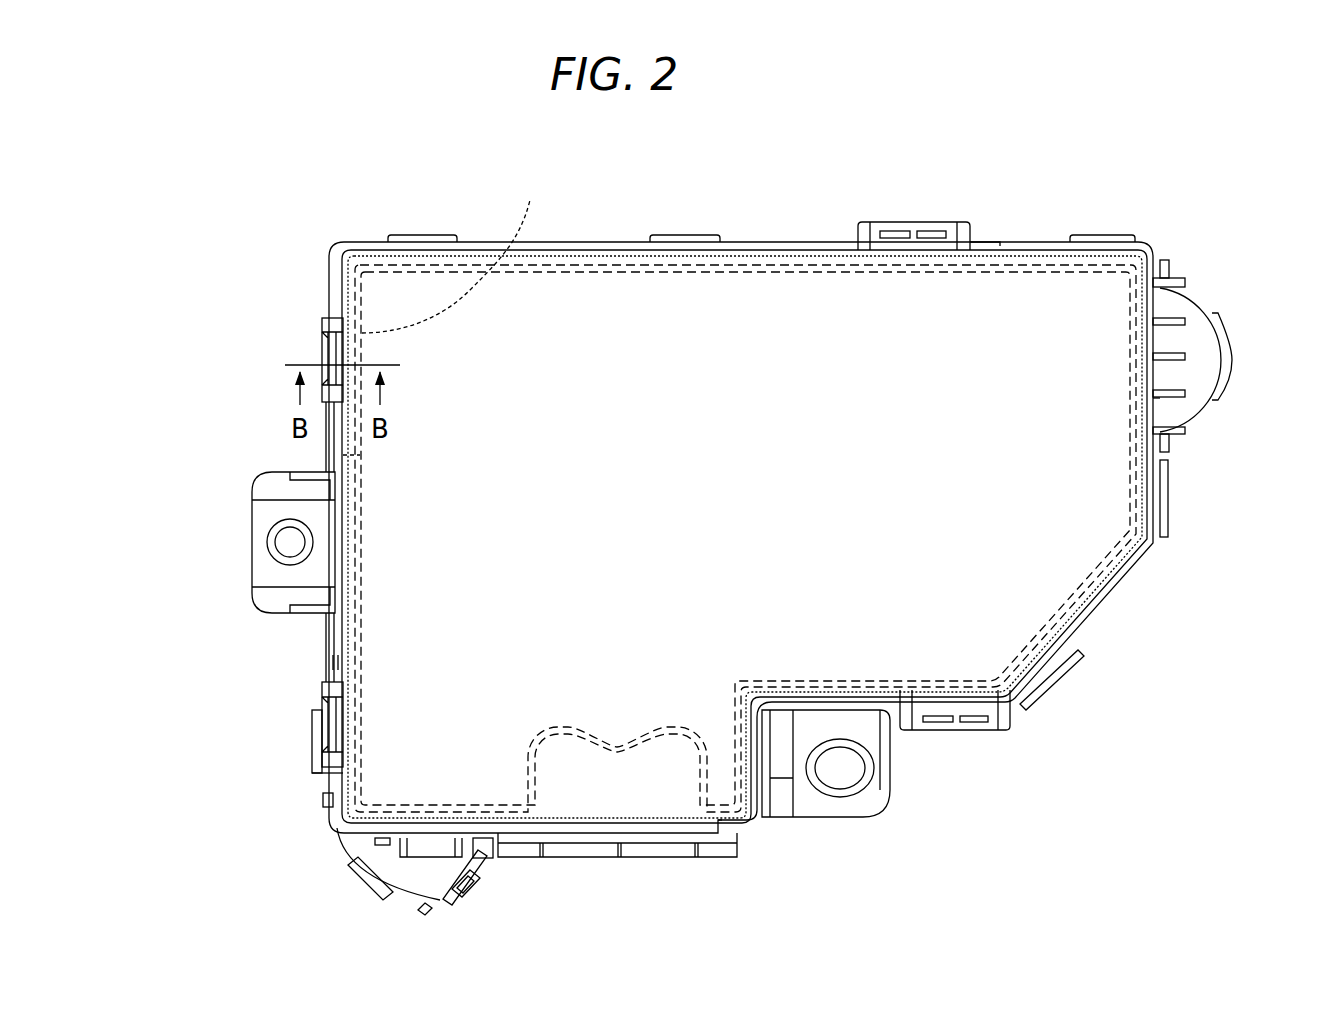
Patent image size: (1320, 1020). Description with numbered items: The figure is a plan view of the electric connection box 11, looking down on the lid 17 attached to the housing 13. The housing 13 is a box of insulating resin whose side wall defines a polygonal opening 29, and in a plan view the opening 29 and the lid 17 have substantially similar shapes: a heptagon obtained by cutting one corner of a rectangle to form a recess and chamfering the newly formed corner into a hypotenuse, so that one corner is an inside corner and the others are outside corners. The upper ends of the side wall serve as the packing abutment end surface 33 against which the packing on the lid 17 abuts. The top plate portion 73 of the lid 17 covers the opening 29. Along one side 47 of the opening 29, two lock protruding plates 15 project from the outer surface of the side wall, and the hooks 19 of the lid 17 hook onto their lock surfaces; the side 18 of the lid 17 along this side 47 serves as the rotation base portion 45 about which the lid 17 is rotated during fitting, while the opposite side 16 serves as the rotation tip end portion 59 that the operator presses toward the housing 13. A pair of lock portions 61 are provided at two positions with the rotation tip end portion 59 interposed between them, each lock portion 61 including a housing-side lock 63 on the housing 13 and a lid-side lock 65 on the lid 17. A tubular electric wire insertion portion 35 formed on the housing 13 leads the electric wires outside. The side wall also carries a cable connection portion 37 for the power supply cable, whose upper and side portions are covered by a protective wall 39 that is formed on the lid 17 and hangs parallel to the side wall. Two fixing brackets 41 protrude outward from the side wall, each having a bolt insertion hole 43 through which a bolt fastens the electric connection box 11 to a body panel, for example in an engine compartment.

The electric connection box 11 is at (278, 211).
The housing 13 is at (336, 831).
The lock protruding plate 15 is at (322, 352).
The side 16 is at (1147, 468).
The lid 17 is at (750, 829).
The side 18 is at (343, 645).
The hook 19 is at (318, 322).
The opening 29 is at (530, 200).
The packing abutment end surface 33 is at (1132, 374).
The electric wire insertion portion 35 is at (1193, 303).
The cable connection portion 37 is at (585, 865).
The protective wall 39 is at (653, 862).
The fixing bracket 41 is at (268, 475).
The bolt insertion hole 43 is at (286, 543).
The rotation base portion 45 is at (330, 662).
The side 47 is at (350, 453).
The rotation tip end portion 59 is at (1160, 412).
The lock portion 61 is at (970, 486).
The housing-side lock 63 is at (856, 221).
The lid-side lock 65 is at (868, 158).
The top plate portion 73 is at (597, 330).